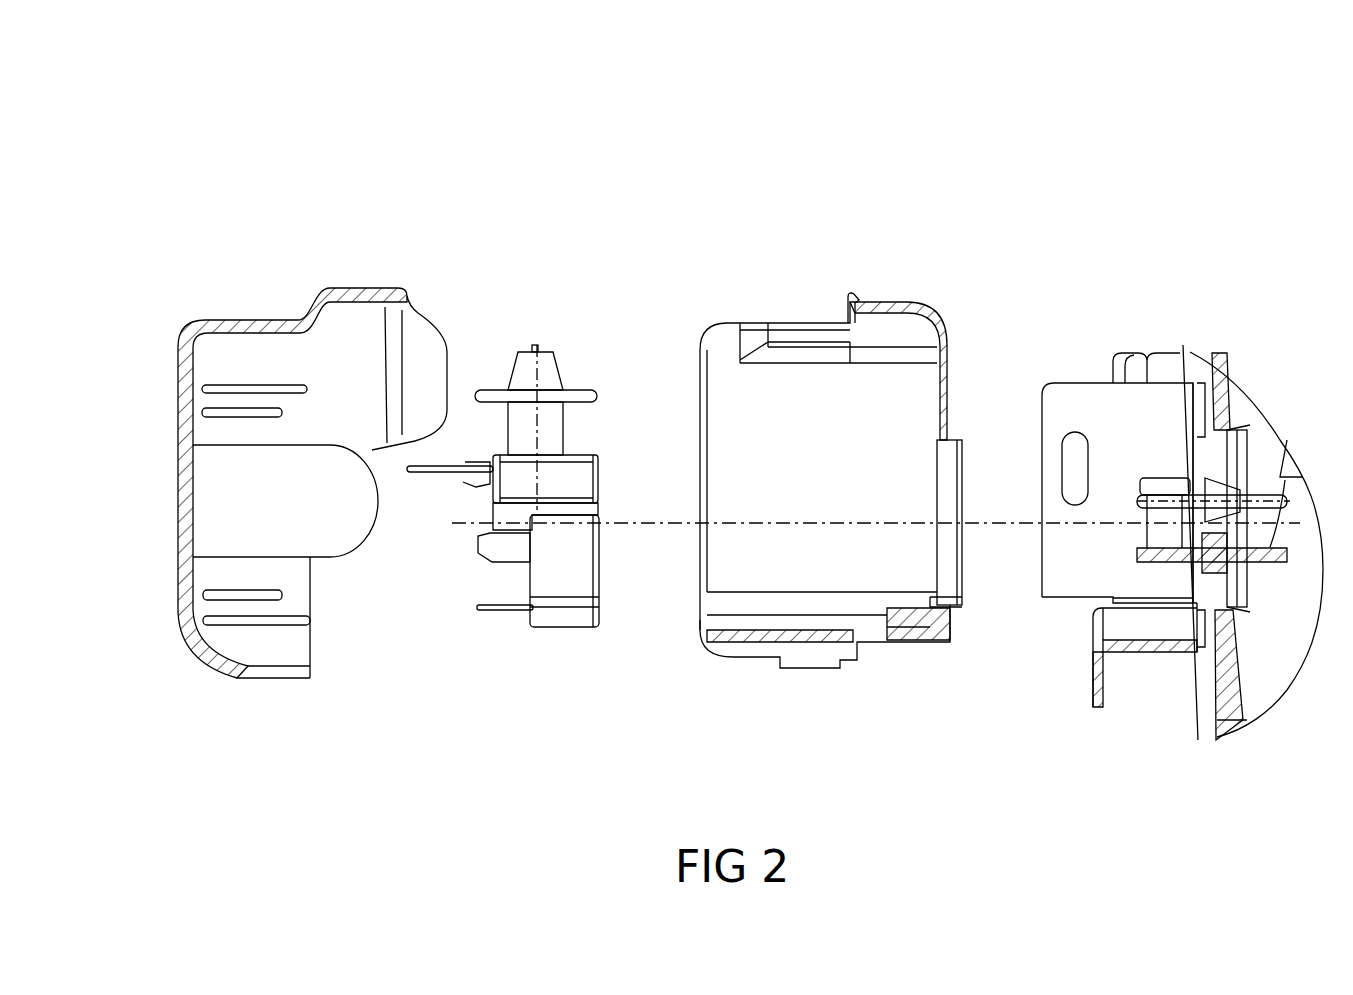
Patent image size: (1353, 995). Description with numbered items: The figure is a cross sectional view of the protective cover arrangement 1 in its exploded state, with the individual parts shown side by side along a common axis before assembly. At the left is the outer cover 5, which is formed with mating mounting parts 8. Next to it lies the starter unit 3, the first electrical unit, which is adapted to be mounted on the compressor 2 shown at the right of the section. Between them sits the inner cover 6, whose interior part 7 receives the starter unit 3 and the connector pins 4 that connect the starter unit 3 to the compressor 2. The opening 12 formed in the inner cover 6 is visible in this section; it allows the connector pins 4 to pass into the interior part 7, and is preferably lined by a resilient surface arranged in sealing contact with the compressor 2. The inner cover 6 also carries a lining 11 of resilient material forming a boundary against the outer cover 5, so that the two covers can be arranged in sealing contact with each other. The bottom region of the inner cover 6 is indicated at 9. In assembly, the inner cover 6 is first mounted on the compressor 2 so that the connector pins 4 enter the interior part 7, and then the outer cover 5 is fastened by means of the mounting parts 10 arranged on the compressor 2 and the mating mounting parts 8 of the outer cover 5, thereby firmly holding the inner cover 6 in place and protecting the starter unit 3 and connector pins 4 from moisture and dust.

The protective cover arrangement 1 is at (815, 123).
The compressor 2 is at (1217, 405).
The starter unit 3 is at (548, 573).
The connector pins 4 is at (1158, 548).
The outer cover 5 is at (312, 447).
The inner cover 6 is at (887, 643).
The interior part 7 is at (797, 479).
The mating mounting parts 8 is at (288, 527).
The housing bottom 9 is at (737, 660).
The mounting parts 10 is at (1147, 410).
The lining 11 is at (857, 297).
The opening 12 is at (947, 543).